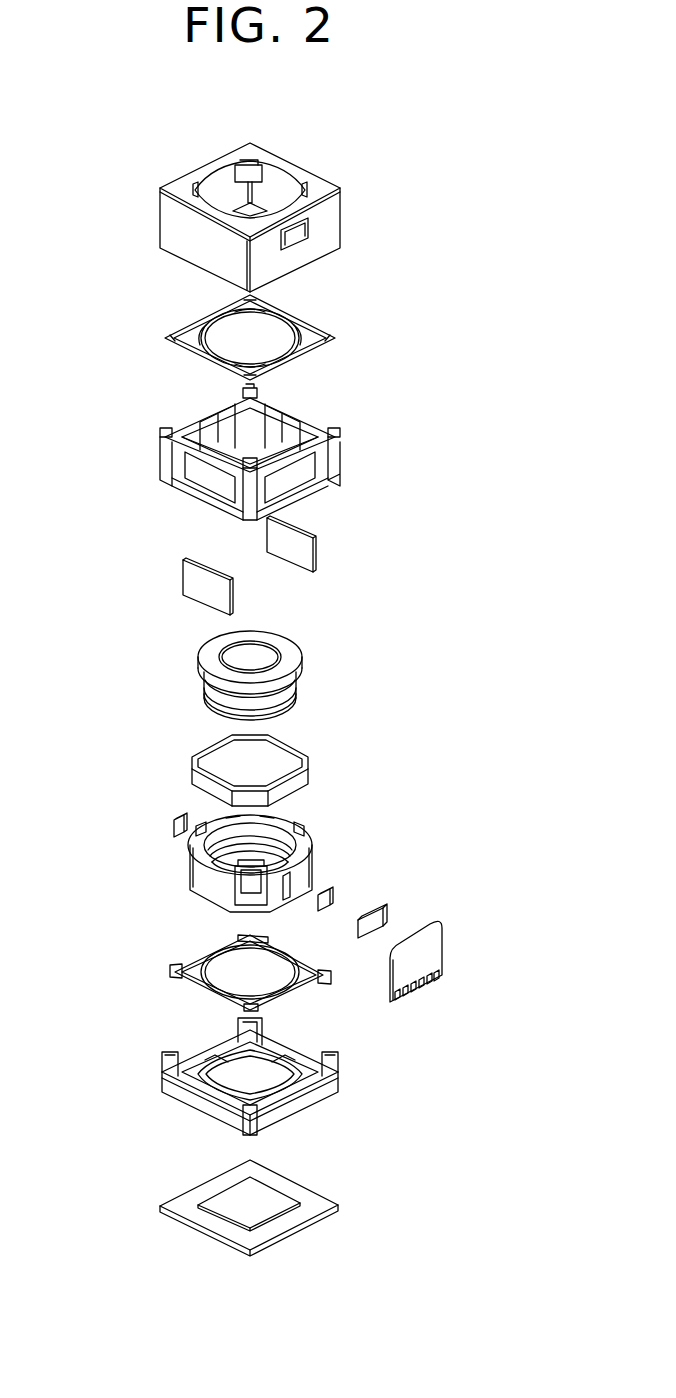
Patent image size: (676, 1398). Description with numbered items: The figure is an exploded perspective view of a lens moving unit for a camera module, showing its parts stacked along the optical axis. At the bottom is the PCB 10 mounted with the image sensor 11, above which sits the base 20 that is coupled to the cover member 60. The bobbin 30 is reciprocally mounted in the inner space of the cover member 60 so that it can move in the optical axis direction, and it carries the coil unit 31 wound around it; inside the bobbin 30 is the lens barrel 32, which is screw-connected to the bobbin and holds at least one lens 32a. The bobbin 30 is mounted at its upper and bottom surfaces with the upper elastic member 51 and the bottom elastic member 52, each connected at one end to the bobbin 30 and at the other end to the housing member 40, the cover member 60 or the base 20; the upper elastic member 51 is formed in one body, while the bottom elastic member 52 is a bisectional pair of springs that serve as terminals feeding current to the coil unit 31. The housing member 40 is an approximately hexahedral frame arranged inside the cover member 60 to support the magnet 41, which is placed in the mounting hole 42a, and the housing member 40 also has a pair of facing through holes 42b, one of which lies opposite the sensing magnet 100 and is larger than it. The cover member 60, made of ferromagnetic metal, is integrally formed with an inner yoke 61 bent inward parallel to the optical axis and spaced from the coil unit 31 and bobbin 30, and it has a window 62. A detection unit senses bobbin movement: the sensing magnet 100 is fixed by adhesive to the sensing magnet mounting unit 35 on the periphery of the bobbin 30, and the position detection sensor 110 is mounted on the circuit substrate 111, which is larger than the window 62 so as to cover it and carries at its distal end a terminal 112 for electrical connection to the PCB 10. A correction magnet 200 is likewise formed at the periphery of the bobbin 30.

The PCB 10 is at (222, 1189).
The image sensor 11 is at (268, 1198).
The base 20 is at (163, 1083).
The bobbin 30 is at (245, 850).
The coil unit 31 is at (195, 780).
The lens barrel 32 is at (231, 657).
The lens 32a is at (270, 655).
The sensing magnet mounting unit 35 is at (288, 868).
The housing member 40 is at (223, 478).
The magnet 41 is at (185, 588).
The mounting hole 42a is at (182, 488).
The through hole 42b is at (300, 490).
The upper elastic member 51 is at (165, 336).
The bottom elastic member 52 is at (178, 968).
The cover member 60 is at (251, 192).
The inner yoke 61 is at (258, 170).
The window 62 is at (305, 240).
The sensing magnet 100 is at (332, 897).
The position detection sensor 110 is at (383, 917).
The circuit substrate 111 is at (470, 985).
The terminal 112 is at (400, 997).
The correction magnet 200 is at (170, 825).